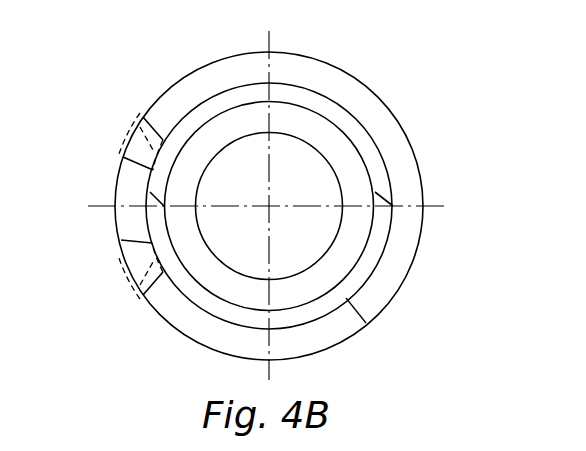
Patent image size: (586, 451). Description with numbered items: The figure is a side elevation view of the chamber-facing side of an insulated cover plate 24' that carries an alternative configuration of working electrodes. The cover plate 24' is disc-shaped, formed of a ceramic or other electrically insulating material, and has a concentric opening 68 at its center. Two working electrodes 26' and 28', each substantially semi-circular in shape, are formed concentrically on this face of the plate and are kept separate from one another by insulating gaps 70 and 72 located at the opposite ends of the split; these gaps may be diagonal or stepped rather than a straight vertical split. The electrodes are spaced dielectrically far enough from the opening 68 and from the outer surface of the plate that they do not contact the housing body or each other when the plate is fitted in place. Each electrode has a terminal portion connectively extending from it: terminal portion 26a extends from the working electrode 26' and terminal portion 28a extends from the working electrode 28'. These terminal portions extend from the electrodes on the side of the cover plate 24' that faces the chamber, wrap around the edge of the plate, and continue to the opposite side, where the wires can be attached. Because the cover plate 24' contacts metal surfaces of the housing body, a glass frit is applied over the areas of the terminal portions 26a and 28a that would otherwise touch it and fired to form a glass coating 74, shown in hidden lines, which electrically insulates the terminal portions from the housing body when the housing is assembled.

The cover plate 24' is at (295, 206).
The working electrode 26' is at (300, 137).
The working electrode 28' is at (294, 287).
The terminal portion 26a is at (148, 117).
The terminal portion 28a is at (148, 300).
The concentric opening 68 is at (288, 170).
The insulating gap 70 is at (163, 206).
The insulating gap 72 is at (393, 206).
The glass coating 74 is at (123, 138).